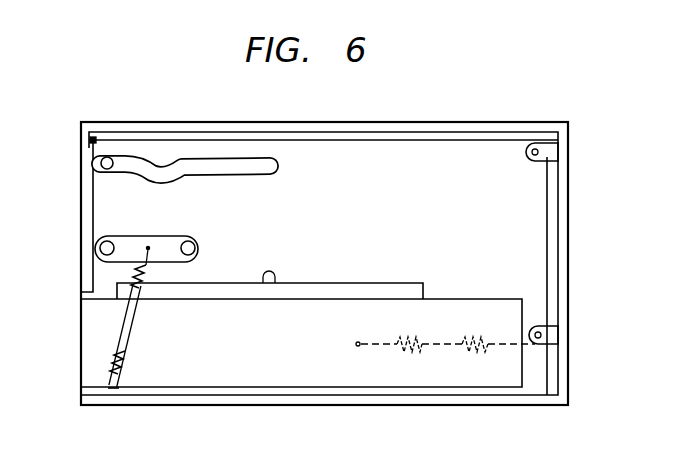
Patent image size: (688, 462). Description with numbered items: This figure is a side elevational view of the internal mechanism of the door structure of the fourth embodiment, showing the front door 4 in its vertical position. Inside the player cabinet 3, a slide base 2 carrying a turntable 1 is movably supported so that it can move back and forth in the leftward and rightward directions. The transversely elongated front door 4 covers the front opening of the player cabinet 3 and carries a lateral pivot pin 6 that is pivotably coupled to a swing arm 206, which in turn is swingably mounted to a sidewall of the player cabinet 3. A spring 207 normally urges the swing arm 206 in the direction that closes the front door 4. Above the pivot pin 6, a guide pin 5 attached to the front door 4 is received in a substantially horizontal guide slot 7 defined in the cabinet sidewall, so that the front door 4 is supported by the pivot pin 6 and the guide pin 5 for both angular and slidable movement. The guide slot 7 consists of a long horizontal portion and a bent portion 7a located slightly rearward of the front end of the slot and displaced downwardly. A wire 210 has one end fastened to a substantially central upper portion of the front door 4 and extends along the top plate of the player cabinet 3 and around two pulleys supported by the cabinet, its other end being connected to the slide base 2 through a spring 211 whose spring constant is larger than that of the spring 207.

The turntable 1 is at (383, 285).
The slide base 2 is at (290, 322).
The player cabinet 3 is at (445, 122).
The front door 4 is at (84, 193).
The guide pin 5 is at (98, 166).
The pivot pin 6 is at (97, 248).
The guide slot 7 is at (229, 158).
The bent portion 7a is at (152, 172).
The swing arm 206 is at (123, 252).
The spring 207 is at (125, 320).
The wire 210 is at (365, 141).
The spring 211 is at (450, 352).